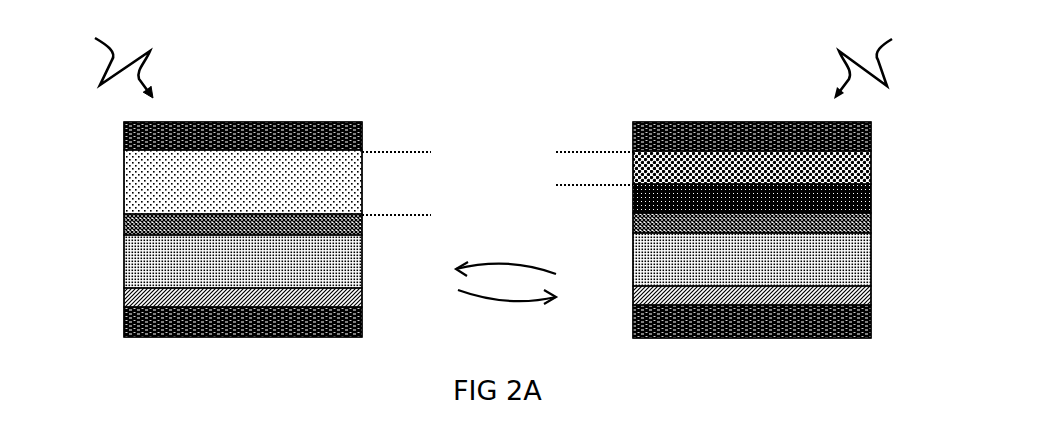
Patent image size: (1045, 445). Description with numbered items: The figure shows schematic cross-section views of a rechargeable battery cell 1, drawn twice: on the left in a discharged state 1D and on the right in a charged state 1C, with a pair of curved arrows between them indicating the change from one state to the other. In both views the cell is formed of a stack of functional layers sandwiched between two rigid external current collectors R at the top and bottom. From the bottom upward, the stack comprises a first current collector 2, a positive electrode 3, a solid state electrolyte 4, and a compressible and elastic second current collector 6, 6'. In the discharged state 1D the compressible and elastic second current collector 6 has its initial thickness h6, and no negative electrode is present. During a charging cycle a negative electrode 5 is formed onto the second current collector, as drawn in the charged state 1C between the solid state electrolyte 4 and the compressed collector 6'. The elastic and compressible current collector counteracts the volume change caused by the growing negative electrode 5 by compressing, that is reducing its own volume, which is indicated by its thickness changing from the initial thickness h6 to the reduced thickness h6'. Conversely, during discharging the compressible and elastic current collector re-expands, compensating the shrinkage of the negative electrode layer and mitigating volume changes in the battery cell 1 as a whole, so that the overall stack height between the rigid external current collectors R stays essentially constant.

The rechargeable battery cell 1 is at (500, 56).
The discharged state 1D is at (206, 177).
The charged state 1C is at (778, 175).
The rigid external current collector R is at (135, 128).
The first current collector 2 is at (135, 287).
The positive electrode 3 is at (135, 256).
The solid state electrolyte 4 is at (135, 222).
The negative electrode 5 is at (850, 191).
The compressible and elastic second current collector 6 is at (215, 182).
The compressed second current collector 6' is at (786, 167).
The initial thickness h6 is at (404, 183).
The reduced thickness h6' is at (575, 169).